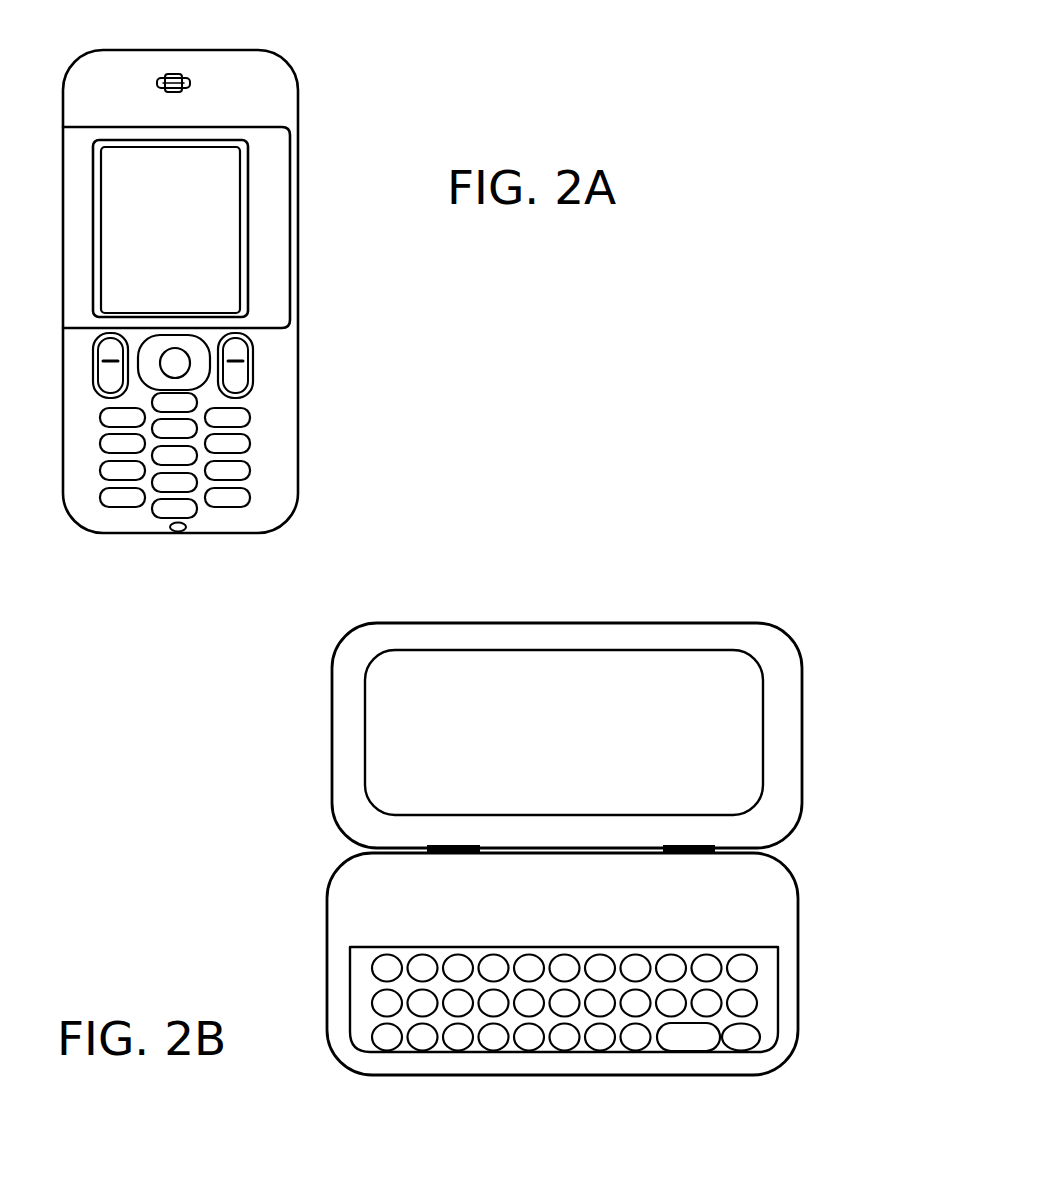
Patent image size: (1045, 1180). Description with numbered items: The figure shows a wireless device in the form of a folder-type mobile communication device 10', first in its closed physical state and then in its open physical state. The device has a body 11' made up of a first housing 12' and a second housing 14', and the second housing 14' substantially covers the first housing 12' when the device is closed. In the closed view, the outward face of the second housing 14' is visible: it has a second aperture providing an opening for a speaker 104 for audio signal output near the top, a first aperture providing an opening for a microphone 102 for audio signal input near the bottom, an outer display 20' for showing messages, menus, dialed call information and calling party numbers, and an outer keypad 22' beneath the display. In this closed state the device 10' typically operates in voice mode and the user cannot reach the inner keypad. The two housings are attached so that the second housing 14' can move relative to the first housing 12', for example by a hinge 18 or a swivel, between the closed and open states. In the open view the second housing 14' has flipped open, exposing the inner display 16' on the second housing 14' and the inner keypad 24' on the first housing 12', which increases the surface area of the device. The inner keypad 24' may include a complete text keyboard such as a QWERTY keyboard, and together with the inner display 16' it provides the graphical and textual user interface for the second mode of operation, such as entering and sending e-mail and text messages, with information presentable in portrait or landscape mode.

In FIG. 2A, the folder-type mobile communication device 10' is at (301, 280).
In FIG. 2B, the folder-type mobile communication device 10' is at (538, 799).
In FIG. 2A, the body 11' is at (247, 219).
In FIG. 2A, the second housing 14' is at (243, 291).
In FIG. 2B, the second housing 14' is at (506, 735).
In FIG. 2A, the outer display 20' is at (257, 228).
In FIG. 2A, the outer keypad 22' is at (262, 425).
In FIG. 2A, the speaker 104 is at (190, 80).
In FIG. 2A, the microphone 102 is at (184, 530).
In FIG. 2B, the inner display 16' is at (514, 732).
In FIG. 2B, the hinge 18 is at (700, 845).
In FIG. 2B, the first housing 12' is at (507, 964).
In FIG. 2B, the inner keypad 24' is at (494, 997).